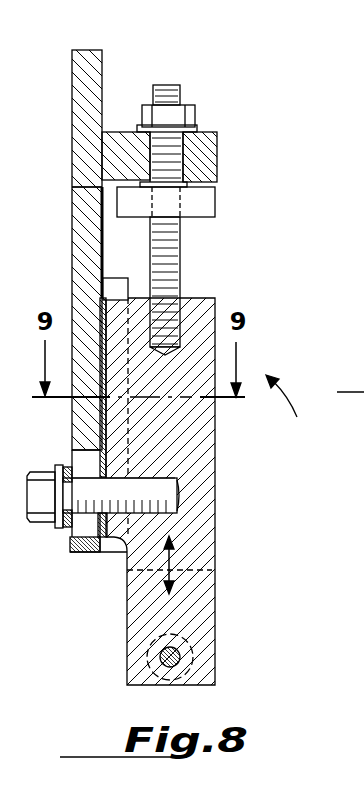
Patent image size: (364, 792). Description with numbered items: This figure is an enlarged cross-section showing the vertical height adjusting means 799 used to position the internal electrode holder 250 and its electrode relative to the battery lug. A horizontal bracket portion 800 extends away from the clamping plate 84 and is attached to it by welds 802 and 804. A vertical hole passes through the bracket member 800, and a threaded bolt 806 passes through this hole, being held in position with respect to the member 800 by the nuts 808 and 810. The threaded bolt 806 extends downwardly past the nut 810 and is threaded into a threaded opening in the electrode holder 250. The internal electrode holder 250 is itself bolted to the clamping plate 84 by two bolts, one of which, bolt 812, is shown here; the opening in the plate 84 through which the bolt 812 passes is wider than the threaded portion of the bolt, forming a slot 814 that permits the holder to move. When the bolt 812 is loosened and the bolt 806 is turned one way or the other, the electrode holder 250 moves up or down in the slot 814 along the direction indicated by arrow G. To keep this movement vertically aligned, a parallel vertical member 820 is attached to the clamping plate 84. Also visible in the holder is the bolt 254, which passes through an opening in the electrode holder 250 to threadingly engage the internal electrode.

The clamping plate 84 is at (83, 68).
The weld 802 is at (104, 130).
The weld 804 is at (76, 186).
The threaded bolt 806 is at (170, 96).
The nut 808 is at (190, 117).
The horizontal bracket portion 800 is at (210, 156).
The nut 810 is at (205, 208).
The parallel vertical member 820 is at (113, 290).
The internal electrode holder 250 is at (207, 300).
The bolt 254 is at (180, 651).
The vertical height adjusting means 799 is at (288, 411).
The bolt 812 is at (50, 522).
The slot 814 is at (82, 530).
The arrow G is at (182, 557).